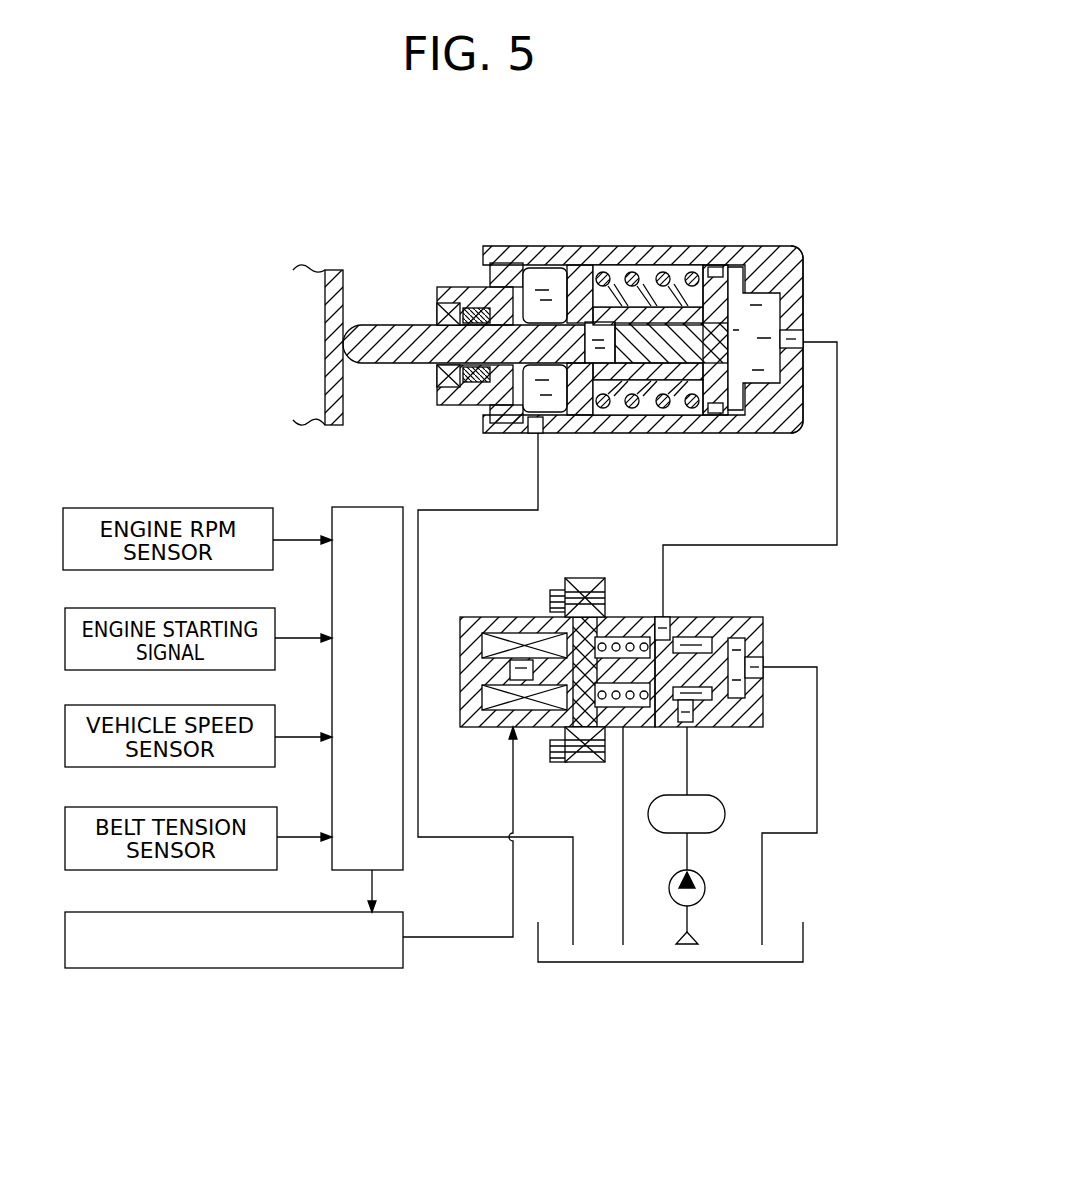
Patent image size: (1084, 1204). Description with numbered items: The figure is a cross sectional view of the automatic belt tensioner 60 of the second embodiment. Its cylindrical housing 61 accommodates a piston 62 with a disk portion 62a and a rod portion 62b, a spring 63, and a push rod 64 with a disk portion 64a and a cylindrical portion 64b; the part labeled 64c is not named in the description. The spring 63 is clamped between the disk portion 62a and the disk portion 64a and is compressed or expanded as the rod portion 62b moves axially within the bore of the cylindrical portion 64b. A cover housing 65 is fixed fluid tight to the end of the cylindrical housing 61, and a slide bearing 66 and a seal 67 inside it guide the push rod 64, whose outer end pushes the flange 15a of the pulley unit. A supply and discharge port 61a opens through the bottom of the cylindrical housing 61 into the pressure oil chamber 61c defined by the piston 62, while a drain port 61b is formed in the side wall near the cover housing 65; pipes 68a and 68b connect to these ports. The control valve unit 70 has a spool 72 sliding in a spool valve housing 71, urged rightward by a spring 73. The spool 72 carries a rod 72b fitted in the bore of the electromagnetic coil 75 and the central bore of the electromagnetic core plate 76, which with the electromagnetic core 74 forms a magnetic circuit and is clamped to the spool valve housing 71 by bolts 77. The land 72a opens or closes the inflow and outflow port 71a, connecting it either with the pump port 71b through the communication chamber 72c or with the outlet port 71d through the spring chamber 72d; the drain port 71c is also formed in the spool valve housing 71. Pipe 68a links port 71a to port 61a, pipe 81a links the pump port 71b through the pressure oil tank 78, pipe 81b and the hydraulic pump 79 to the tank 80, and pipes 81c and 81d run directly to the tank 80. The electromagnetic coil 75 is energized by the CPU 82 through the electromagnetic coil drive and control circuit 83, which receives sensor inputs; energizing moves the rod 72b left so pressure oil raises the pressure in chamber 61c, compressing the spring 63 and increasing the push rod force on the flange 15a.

The flange 15a is at (316, 282).
The automatic belt tensioner 60 is at (432, 179).
The cylindrical housing 61 is at (697, 250).
The supply and discharge port 61a is at (806, 335).
The drain port 61b is at (538, 433).
The pressure oil chamber 61c is at (795, 252).
The piston 62 is at (762, 318).
The disk portion 62a is at (722, 385).
The rod portion 62b is at (678, 345).
The spring 63 is at (660, 276).
The push rod 64 is at (390, 340).
The disk portion 64a is at (580, 280).
The cylindrical portion 64b is at (643, 370).
The shaft plate 64c is at (560, 280).
The cover housing 65 is at (463, 287).
The slide bearing 66 is at (466, 387).
The seal 67 is at (437, 377).
The pipe 68a is at (838, 445).
The pipe 68b is at (420, 553).
The control valve unit 70 is at (604, 572).
The spool valve housing 71 is at (737, 620).
The inflow and outflow port 71a is at (670, 617).
The pump port 71b is at (690, 724).
The drain port 71c is at (765, 655).
The outlet port 71d is at (622, 707).
The spool 72 is at (717, 617).
The land 72a is at (663, 727).
The rod 72b is at (550, 685).
The communication chamber 72c is at (703, 698).
The spring chamber 72d is at (642, 727).
The spring 73 is at (620, 617).
The electromagnetic core 74 is at (510, 632).
The electromagnetic coil 75 is at (522, 637).
The electromagnetic core plate 76 is at (588, 580).
The bolts 77 is at (556, 595).
The pressure oil tank 78 is at (725, 802).
The hydraulic pump 79 is at (705, 895).
The tank 80 is at (803, 938).
The pipe 81a is at (690, 770).
The pipe 81b is at (690, 847).
The pipe 81c is at (818, 775).
The pipe 81d is at (624, 840).
The CPU 82 is at (365, 507).
The electromagnetic coil drive and control circuit 83 is at (250, 968).